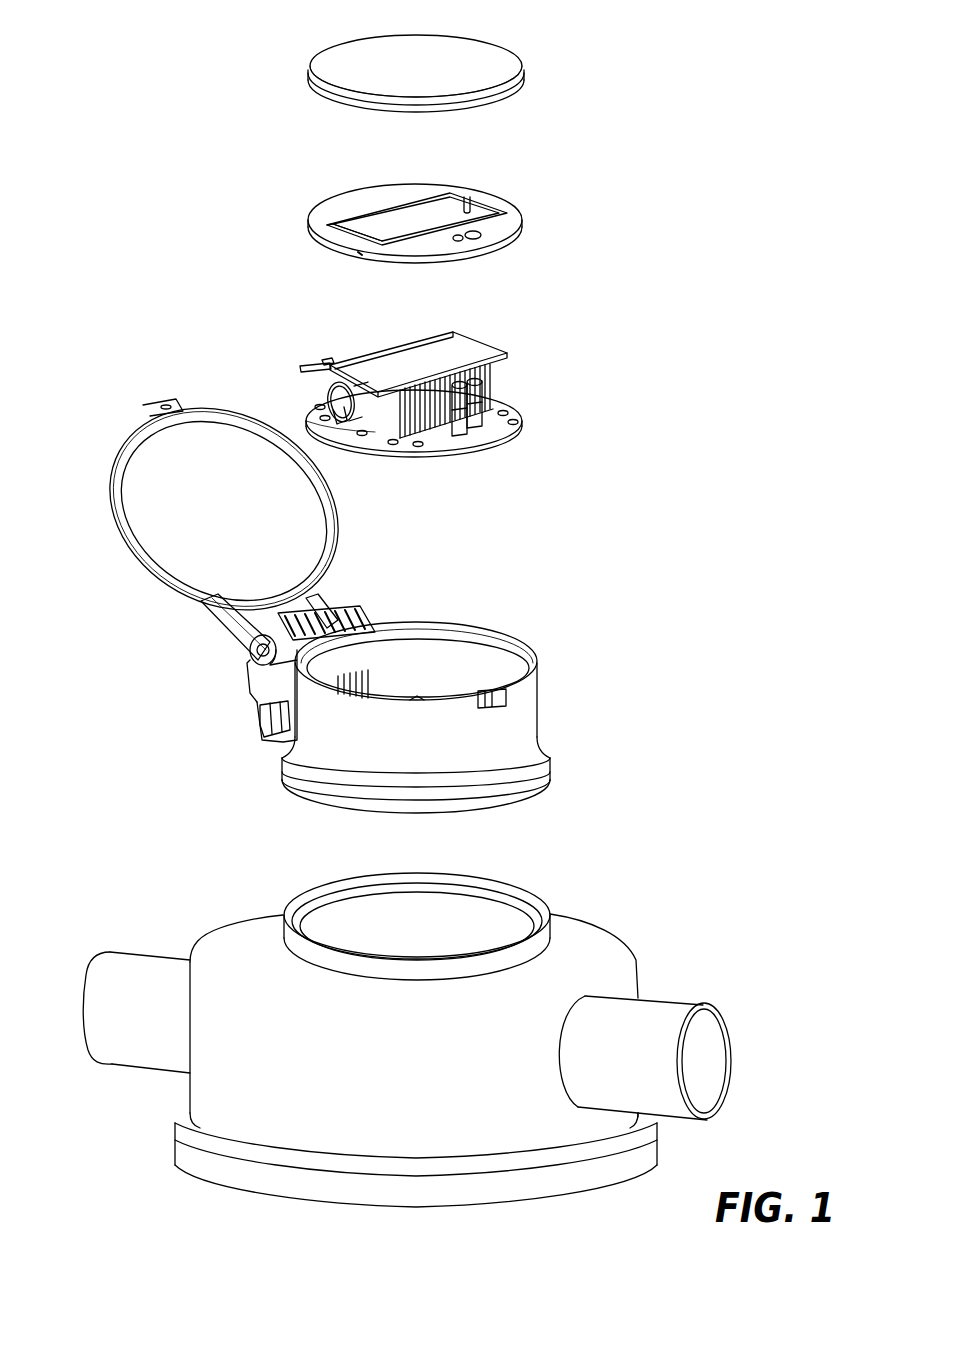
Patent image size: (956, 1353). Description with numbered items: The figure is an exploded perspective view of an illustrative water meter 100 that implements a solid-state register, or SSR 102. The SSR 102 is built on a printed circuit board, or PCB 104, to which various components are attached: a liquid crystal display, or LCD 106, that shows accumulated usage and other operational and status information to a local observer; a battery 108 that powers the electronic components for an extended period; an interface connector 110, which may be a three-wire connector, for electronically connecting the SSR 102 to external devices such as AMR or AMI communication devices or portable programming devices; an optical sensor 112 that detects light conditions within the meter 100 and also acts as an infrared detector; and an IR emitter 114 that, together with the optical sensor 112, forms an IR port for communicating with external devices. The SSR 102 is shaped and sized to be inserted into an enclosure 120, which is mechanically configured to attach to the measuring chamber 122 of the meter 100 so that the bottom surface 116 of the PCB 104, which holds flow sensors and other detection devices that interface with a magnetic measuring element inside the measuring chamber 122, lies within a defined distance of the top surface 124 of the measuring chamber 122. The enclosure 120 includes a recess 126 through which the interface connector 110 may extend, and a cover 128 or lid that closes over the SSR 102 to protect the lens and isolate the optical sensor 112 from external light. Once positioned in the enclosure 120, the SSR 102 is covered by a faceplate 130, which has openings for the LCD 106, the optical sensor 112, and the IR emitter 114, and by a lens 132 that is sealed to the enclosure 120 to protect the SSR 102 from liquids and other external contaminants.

The water meter 100 is at (742, 60).
The solid-state register 102 is at (510, 322).
The printed circuit board 104 is at (316, 418).
The liquid crystal display 106 is at (397, 357).
The battery 108 is at (373, 408).
The interface connector 110 is at (322, 360).
The optical sensor 112 is at (480, 410).
The IR emitter 114 is at (462, 400).
The bottom surface of the PCB 116 is at (431, 452).
The enclosure 120 is at (523, 712).
The measuring chamber 122 is at (438, 1089).
The top surface of the measuring chamber 124 is at (430, 913).
The recess 126 is at (258, 690).
The cover 128 is at (138, 462).
The faceplate 130 is at (335, 212).
The lens 132 is at (340, 75).